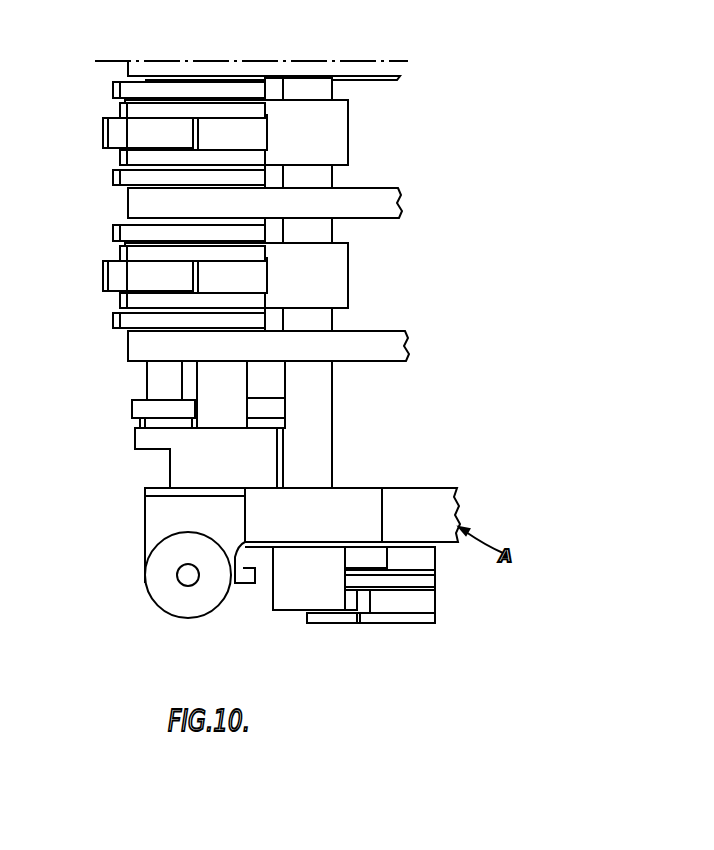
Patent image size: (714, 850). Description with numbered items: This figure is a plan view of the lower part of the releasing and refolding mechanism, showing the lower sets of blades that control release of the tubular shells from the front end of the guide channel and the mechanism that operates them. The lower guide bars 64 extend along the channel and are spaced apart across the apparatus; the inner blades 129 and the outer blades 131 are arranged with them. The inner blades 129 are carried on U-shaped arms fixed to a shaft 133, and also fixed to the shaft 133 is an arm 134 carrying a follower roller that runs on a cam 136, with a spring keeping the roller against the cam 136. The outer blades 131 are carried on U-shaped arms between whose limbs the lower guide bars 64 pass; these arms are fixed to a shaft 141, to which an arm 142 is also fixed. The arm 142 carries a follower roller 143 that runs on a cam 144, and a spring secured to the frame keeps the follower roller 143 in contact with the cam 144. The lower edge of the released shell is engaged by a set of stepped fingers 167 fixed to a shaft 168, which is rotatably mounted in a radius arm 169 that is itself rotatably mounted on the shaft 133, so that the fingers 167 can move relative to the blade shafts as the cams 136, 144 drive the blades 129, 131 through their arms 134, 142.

The lower guide bars 64 is at (133, 202).
The inner blades 129 is at (112, 176).
The outer blades 131 is at (120, 109).
The stepped fingers 167 is at (103, 132).
The shaft 168 is at (152, 376).
The radius arm 169 is at (145, 438).
The shaft 133 is at (227, 385).
The shaft 141 is at (313, 449).
The arm 134 is at (267, 562).
The cam 136 is at (422, 580).
The arm 142 is at (357, 593).
The follower roller 143 is at (422, 618).
The cam 144 is at (330, 618).